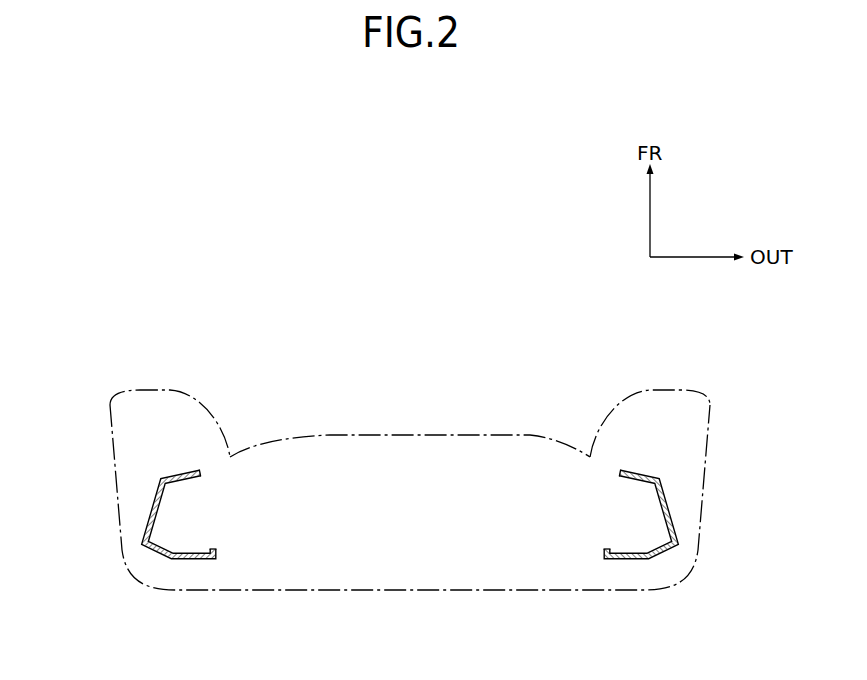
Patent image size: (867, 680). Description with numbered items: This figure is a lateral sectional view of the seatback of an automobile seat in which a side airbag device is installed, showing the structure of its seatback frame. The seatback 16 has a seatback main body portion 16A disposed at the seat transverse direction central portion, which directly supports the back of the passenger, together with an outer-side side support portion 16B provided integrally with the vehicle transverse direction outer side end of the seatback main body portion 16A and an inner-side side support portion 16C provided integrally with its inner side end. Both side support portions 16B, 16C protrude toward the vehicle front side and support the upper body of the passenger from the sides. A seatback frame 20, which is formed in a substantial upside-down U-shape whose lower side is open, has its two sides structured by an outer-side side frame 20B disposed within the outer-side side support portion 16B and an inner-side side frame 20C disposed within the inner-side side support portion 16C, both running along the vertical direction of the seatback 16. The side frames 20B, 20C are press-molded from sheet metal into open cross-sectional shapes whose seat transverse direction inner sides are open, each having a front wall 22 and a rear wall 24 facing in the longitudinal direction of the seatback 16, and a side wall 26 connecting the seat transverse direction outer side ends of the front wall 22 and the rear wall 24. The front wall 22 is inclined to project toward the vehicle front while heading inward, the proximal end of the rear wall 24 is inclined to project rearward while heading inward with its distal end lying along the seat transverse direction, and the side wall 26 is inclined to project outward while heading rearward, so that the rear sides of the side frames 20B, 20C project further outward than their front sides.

The seatback 16 is at (393, 426).
The seatback main body portion 16A is at (495, 435).
The outer-side side support portion 16B is at (670, 390).
The inner-side side support portion 16C is at (167, 390).
The seatback frame 20 is at (411, 508).
The outer-side side frame 20B is at (674, 505).
The inner-side side frame 20C is at (146, 505).
The front wall 22 is at (175, 470).
The rear wall 24 is at (185, 559).
The side wall 26 is at (145, 525).